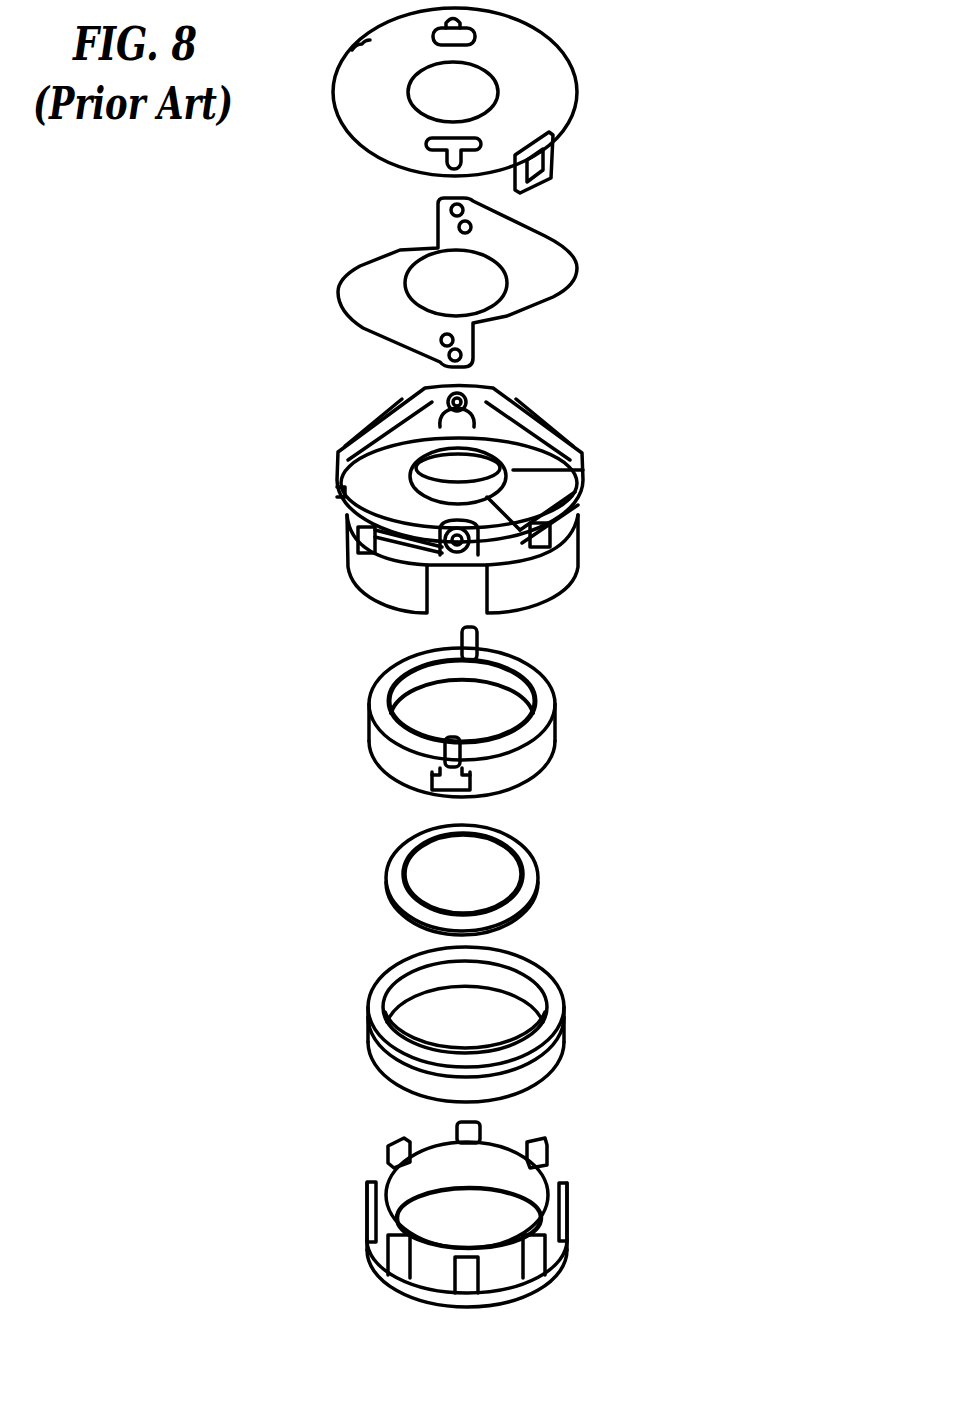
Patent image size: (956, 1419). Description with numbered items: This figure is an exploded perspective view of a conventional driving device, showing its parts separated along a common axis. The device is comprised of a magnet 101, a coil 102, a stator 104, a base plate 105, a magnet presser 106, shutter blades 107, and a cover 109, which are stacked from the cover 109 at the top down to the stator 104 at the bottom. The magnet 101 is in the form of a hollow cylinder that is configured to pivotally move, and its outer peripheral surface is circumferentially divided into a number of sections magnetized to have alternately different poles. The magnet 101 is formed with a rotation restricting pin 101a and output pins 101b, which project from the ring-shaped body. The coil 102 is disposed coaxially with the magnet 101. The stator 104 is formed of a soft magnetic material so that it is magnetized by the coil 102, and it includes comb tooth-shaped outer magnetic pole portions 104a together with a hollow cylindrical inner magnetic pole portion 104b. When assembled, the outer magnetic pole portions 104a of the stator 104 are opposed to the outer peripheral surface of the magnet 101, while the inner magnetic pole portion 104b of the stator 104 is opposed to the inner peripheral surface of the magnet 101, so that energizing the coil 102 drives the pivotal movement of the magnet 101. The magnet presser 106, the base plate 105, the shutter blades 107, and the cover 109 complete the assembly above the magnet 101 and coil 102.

The cover 109 is at (567, 63).
The shutter blades 107 is at (497, 247).
The base plate 105 is at (575, 445).
The magnet 101 is at (469, 742).
The rotation restricting pin 101a is at (440, 775).
The output pins 101b is at (445, 752).
The magnet presser 106 is at (540, 865).
The coil 102 is at (548, 987).
The stator 104 is at (480, 1207).
The outer magnetic pole portions 104a is at (535, 1143).
The inner magnetic pole portion 104b is at (468, 1168).